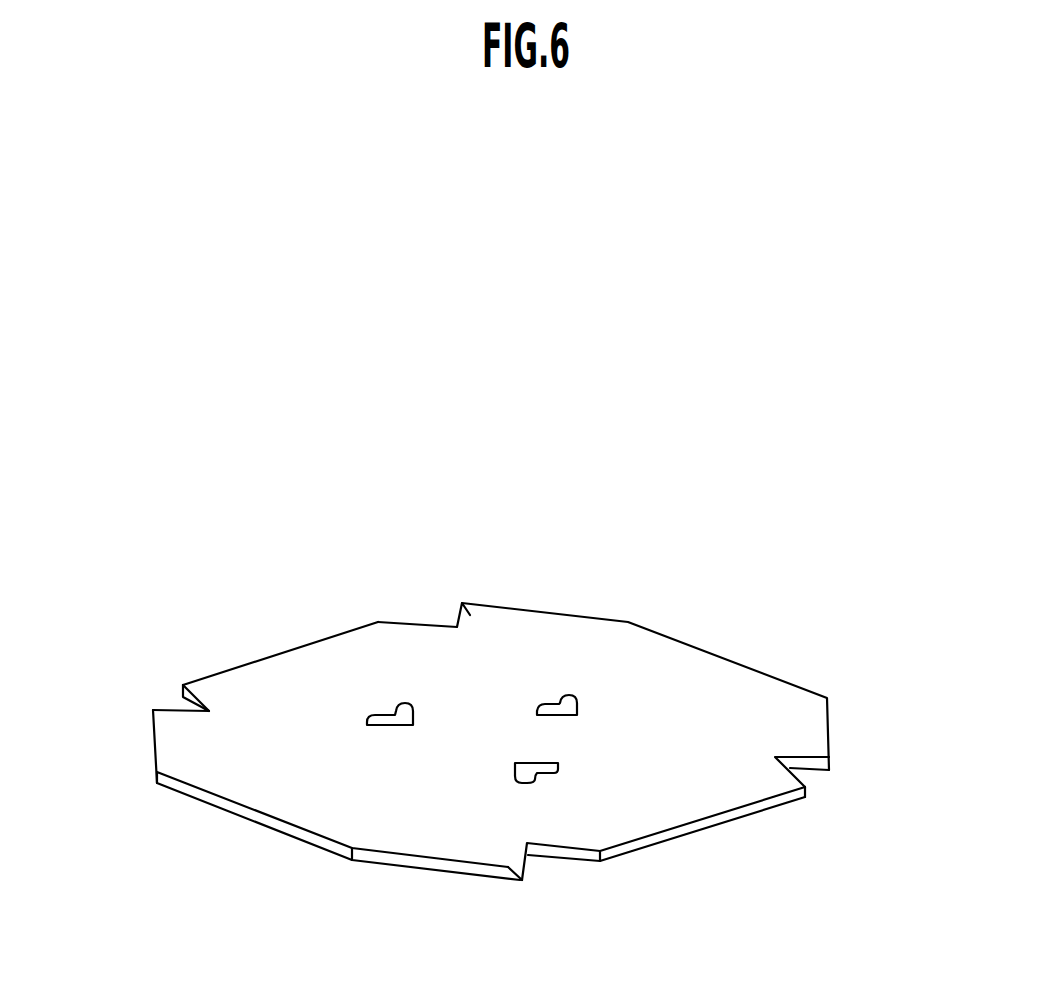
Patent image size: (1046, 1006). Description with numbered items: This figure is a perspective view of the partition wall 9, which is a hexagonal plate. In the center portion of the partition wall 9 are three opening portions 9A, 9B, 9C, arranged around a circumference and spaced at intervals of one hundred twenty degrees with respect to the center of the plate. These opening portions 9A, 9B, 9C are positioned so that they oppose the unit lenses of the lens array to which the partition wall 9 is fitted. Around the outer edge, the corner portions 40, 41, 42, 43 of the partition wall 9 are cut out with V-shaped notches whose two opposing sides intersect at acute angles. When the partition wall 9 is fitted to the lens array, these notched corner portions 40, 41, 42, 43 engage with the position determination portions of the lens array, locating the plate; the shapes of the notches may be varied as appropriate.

The partition wall 9 is at (752, 595).
The opening portion 9A is at (548, 710).
The opening portion 9B is at (368, 722).
The opening portion 9C is at (547, 767).
The corner portion 40 is at (461, 603).
The corner portion 41 is at (190, 745).
The corner portion 42 is at (513, 868).
The corner portion 43 is at (790, 720).